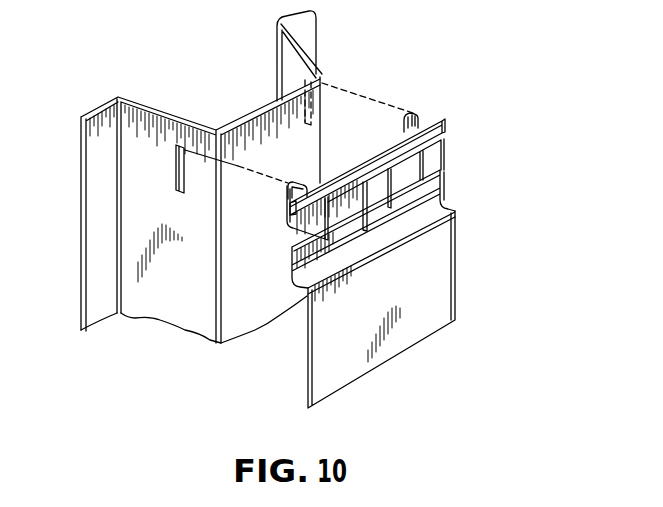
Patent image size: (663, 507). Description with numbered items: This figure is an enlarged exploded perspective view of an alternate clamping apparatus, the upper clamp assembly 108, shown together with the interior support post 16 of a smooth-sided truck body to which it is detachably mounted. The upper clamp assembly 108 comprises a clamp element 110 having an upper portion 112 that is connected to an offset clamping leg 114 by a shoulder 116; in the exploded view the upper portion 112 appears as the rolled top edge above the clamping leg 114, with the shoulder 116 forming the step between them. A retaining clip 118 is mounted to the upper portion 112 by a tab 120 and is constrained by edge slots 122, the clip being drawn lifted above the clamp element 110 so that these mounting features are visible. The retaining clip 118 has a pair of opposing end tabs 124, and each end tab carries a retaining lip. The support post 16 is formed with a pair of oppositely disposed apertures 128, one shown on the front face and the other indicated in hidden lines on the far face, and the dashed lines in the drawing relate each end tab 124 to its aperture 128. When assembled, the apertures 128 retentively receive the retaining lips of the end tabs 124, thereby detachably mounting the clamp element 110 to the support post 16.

The support post 16 is at (170, 303).
The upper clamp assembly 108 is at (460, 247).
The clamp element 110 is at (306, 384).
The upper portion 112 is at (442, 184).
The offset clamping leg 114 is at (440, 296).
The shoulder 116 is at (446, 194).
The retaining clip 118 is at (433, 168).
The tab 120 is at (359, 231).
The edge slots 122 is at (298, 232).
The end tabs 124 is at (287, 193).
The apertures 128 is at (174, 165).